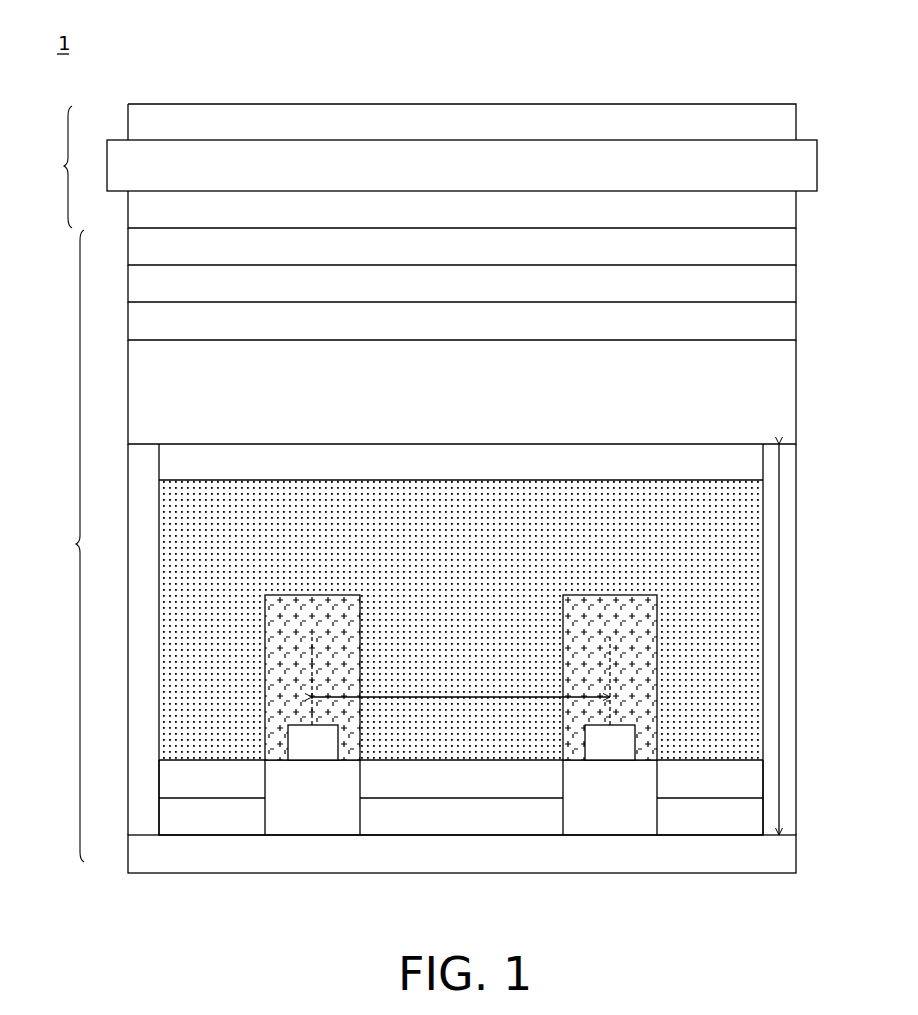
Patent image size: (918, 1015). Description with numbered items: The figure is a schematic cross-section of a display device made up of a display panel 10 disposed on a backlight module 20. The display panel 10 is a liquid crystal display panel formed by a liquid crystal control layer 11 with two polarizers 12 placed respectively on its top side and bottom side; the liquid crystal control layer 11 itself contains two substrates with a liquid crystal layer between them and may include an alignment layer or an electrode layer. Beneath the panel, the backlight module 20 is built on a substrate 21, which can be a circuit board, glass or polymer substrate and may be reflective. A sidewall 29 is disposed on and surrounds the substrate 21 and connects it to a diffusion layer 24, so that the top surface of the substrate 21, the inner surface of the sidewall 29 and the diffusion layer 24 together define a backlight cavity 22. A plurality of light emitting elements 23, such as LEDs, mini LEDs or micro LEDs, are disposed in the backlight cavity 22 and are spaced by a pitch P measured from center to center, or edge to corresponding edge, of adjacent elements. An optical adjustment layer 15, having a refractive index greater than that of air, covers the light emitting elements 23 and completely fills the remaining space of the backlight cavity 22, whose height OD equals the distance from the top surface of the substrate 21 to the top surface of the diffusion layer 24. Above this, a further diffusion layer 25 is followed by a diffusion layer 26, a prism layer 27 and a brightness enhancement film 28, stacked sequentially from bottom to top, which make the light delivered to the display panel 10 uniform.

The display panel 10 is at (57, 167).
The liquid crystal control layer 11 is at (128, 168).
The polarizers 12 is at (132, 120).
The backlight module 20 is at (68, 546).
The substrate 21 is at (134, 859).
The backlight cavity 22 is at (156, 655).
The light emitting elements 23 is at (300, 745).
The diffusion layer 24 is at (174, 466).
The diffusion layer 25 is at (134, 393).
The diffusion layer 26 is at (134, 321).
The prism layer 27 is at (134, 283).
The brightness enhancement film 28 is at (134, 245).
The sidewall 29 is at (134, 796).
The optical adjustment layer 15 is at (742, 548).
The pitch P is at (461, 681).
The backlight cavity height OD is at (780, 640).